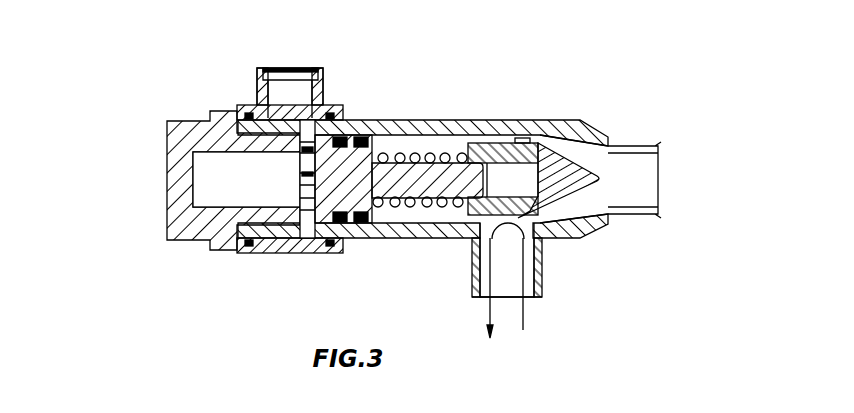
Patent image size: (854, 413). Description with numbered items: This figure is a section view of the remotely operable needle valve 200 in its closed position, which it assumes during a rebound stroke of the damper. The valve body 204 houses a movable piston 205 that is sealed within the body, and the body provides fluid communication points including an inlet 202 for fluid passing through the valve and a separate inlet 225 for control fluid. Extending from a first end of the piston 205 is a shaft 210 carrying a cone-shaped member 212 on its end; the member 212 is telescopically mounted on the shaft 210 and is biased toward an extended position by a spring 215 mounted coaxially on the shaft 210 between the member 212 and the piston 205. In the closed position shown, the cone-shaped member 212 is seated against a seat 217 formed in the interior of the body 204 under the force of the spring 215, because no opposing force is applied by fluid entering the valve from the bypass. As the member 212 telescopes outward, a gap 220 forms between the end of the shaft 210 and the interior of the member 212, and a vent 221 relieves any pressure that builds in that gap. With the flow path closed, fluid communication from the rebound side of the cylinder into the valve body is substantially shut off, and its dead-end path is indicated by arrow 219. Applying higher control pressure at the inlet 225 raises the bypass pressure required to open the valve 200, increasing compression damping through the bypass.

The remotely operable needle valve 200 is at (675, 90).
The inlet 202 is at (666, 161).
The valve body 204 is at (190, 138).
The piston 205 is at (346, 167).
The shaft 210 is at (424, 178).
The cone-shaped member 212 is at (574, 186).
The spring 215 is at (408, 212).
The seat 217 is at (588, 176).
The arrow 219 is at (524, 268).
The gap 220 is at (528, 183).
The vent 221 is at (522, 162).
The inlet 225 is at (280, 92).